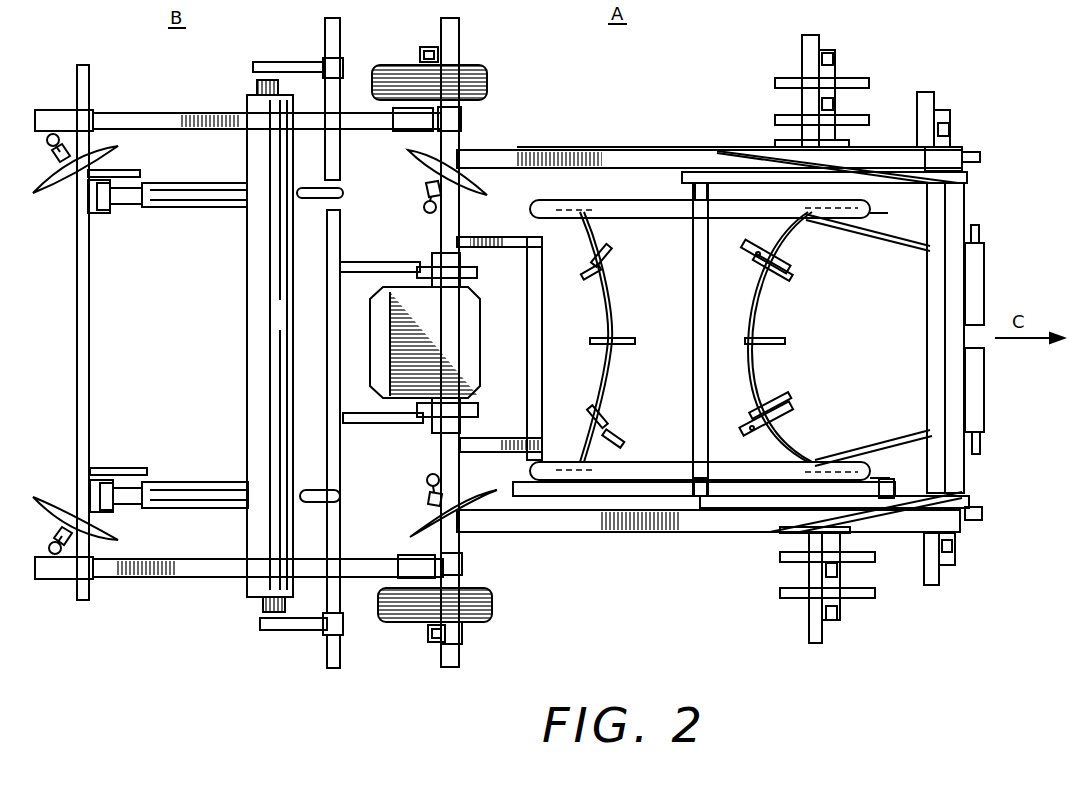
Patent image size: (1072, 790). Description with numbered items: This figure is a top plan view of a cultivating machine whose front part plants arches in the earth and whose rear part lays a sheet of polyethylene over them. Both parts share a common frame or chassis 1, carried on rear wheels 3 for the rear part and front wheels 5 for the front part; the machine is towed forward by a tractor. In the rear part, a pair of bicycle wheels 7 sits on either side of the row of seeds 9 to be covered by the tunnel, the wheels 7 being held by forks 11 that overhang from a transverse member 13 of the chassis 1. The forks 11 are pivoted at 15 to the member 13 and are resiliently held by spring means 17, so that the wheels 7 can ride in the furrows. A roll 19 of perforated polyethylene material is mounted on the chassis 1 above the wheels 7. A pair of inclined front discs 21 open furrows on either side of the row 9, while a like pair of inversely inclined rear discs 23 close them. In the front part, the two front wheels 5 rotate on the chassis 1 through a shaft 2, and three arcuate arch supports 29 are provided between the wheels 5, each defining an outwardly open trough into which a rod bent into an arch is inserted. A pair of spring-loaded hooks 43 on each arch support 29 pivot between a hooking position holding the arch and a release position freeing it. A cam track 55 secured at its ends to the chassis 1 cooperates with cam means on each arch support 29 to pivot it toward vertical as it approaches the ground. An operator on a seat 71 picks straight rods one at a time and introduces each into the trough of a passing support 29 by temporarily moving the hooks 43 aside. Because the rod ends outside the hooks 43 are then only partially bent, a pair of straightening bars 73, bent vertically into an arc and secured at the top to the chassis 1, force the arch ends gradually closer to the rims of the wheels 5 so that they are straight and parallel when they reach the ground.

The frame or chassis 1 is at (500, 146).
The shaft 2 is at (702, 375).
The rear wheels 3 is at (472, 72).
The front wheels 5 is at (620, 200).
The bicycle wheels 7 is at (193, 506).
The row of seeds 9 is at (112, 341).
The forks 11 is at (177, 182).
The transverse member 13 is at (84, 304).
The pivot 15 is at (107, 200).
The spring means 17 is at (123, 173).
The roll of polyethylene perforated material 19 is at (268, 325).
The inclined front discs 21 is at (410, 163).
The inversely inclined rear discs 23 is at (50, 193).
The arcuate arch supports 29 is at (613, 367).
The hooks 43 is at (602, 264).
The cam member or track 55 is at (565, 490).
The seat 71 is at (448, 325).
The straightening bars 73 is at (896, 240).